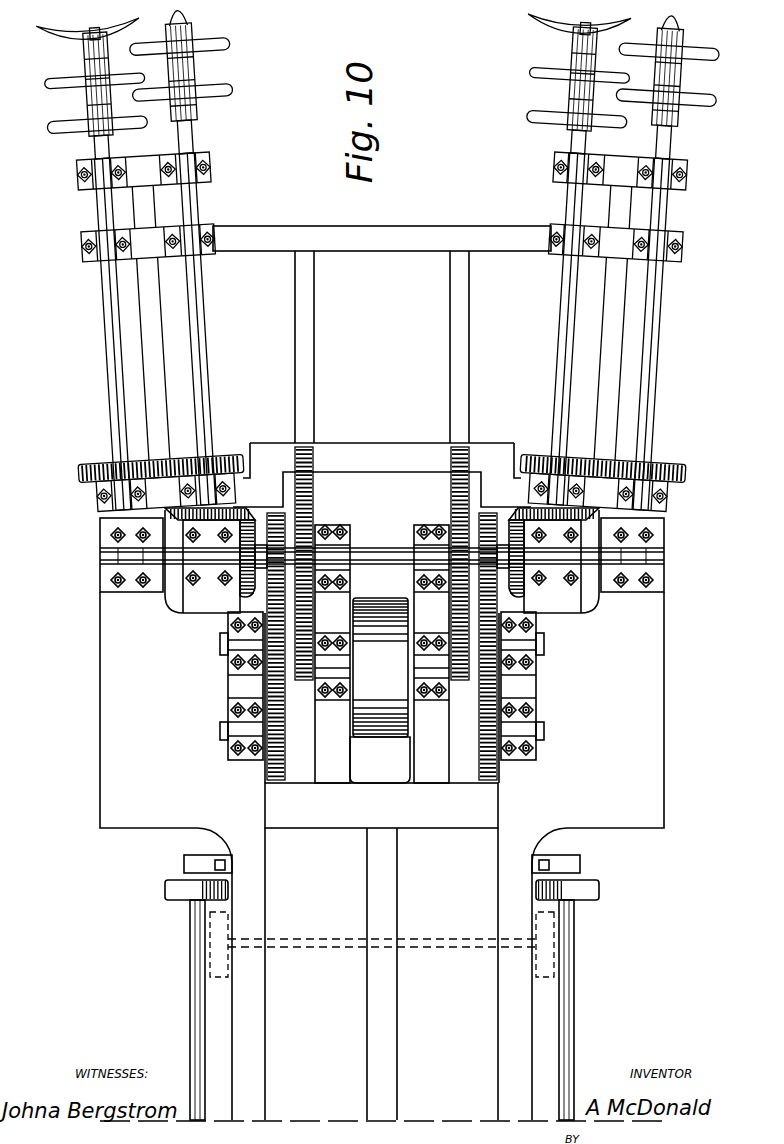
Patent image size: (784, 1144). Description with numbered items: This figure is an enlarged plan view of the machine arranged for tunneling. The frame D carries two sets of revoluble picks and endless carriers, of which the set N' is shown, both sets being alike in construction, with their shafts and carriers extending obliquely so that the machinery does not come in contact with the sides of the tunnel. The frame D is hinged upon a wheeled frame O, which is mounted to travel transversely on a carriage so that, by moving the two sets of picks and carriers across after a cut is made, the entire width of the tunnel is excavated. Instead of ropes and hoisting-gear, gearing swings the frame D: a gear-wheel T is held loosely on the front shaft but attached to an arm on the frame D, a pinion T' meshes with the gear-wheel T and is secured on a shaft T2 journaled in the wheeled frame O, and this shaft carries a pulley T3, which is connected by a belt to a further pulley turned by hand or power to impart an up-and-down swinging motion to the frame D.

The set of revoluble picks and endless carriers N' is at (329, 331).
The frame D is at (381, 253).
The gear-wheel T is at (320, 563).
The pinion T' is at (291, 646).
The shaft T2 is at (377, 567).
The pulley T3 is at (386, 740).
The wheeled frame O is at (381, 951).